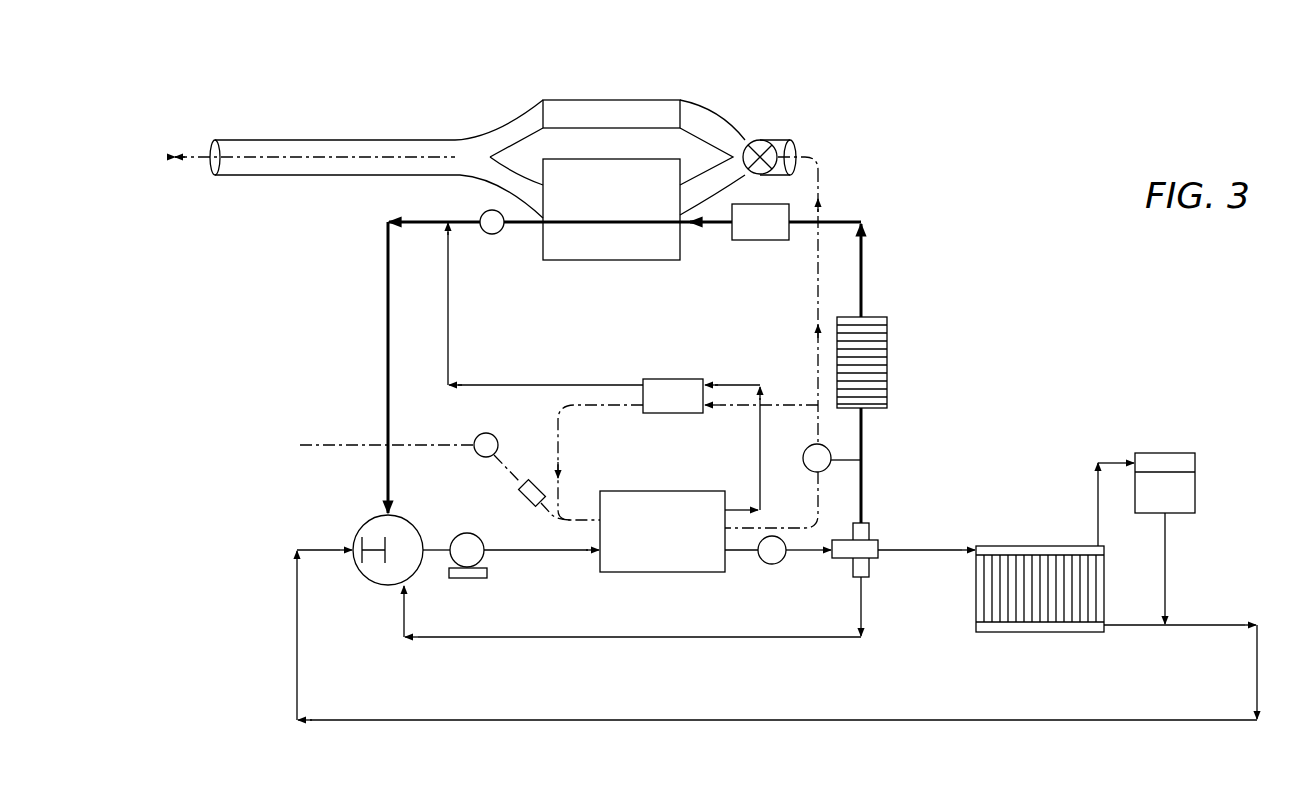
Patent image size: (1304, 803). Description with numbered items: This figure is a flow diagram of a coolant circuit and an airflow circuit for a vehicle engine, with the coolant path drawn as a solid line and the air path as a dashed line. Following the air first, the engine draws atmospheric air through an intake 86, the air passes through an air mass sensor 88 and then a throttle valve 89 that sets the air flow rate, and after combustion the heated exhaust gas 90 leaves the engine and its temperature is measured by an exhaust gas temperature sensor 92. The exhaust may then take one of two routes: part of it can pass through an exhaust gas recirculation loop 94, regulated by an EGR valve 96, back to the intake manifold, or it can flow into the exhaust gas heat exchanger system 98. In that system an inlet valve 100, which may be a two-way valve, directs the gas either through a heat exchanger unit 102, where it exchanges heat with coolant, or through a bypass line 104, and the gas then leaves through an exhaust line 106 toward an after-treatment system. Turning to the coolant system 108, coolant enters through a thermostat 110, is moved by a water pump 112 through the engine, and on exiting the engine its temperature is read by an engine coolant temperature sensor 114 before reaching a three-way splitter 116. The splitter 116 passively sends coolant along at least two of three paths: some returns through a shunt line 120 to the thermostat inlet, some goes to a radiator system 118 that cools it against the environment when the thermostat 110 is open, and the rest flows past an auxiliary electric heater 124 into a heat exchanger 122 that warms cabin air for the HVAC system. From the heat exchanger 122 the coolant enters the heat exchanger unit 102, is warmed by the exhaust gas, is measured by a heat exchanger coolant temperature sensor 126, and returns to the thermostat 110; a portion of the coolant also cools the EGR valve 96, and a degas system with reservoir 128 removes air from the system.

The intake 86 is at (325, 443).
The air mass sensor 88 is at (478, 435).
The throttle valve 89 is at (522, 498).
The exhaust gas 90 is at (817, 500).
The exhaust gas temperature sensor 92 is at (850, 460).
The exhaust gas recirculation loop 94 is at (607, 407).
The EGR valve 96 is at (673, 379).
The exhaust gas heat exchanger system 98 is at (521, 251).
The inlet valve 100 is at (760, 140).
The heat exchanger unit 102 is at (619, 226).
The bypass line 104 is at (615, 98).
The exhaust line 106 is at (303, 155).
The coolant system 108 is at (919, 527).
The thermostat 110 is at (375, 585).
The water pump 112 is at (468, 575).
The engine coolant temperature sensor 114 is at (774, 564).
The three-way splitter 116 is at (868, 560).
The radiator system 118 is at (1044, 528).
The shunt line 120 is at (627, 638).
The heat exchanger 122 is at (888, 362).
The auxiliary electric heater 124 is at (753, 241).
The heat exchanger coolant temperature sensor 126 is at (485, 213).
The degas system reservoir 128 is at (1196, 487).